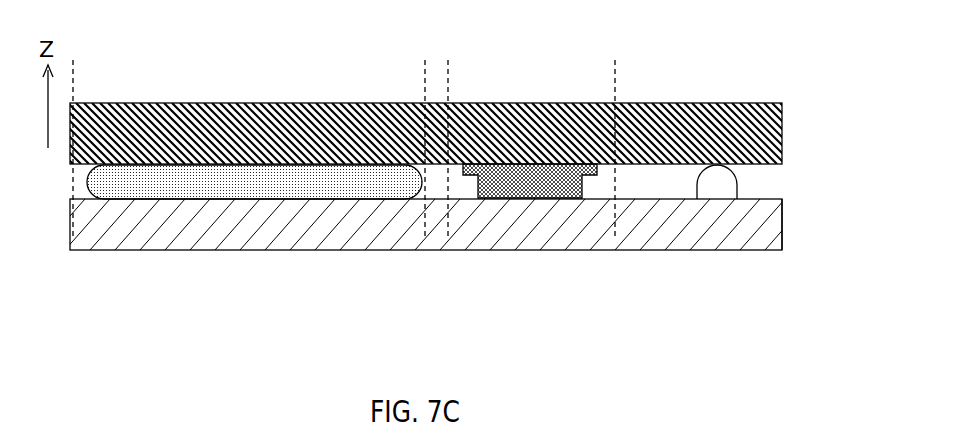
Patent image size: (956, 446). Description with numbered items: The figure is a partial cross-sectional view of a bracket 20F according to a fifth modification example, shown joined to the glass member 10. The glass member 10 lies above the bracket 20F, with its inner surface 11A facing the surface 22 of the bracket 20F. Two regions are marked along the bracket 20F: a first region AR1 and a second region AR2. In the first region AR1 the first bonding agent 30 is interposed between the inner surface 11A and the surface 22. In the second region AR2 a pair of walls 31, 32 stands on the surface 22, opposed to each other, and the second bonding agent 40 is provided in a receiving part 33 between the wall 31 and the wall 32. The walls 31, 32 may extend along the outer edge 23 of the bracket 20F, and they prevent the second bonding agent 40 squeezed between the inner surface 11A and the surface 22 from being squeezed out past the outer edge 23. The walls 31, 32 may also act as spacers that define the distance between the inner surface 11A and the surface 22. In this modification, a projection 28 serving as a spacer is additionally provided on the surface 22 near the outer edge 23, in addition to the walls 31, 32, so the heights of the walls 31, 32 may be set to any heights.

The glass member 10 is at (297, 143).
The surface 22 is at (333, 198).
The second bonding agent 40 is at (520, 173).
The outer edge 23 is at (782, 225).
The first bonding agent 30 is at (197, 187).
The bracket 20F is at (250, 220).
The inner surface 11A is at (380, 165).
The wall 31 is at (473, 178).
The wall 32 is at (593, 187).
The receiving part 33 is at (578, 261).
The projection 28 is at (712, 192).
The first region AR1 is at (425, 43).
The second region AR2 is at (615, 43).